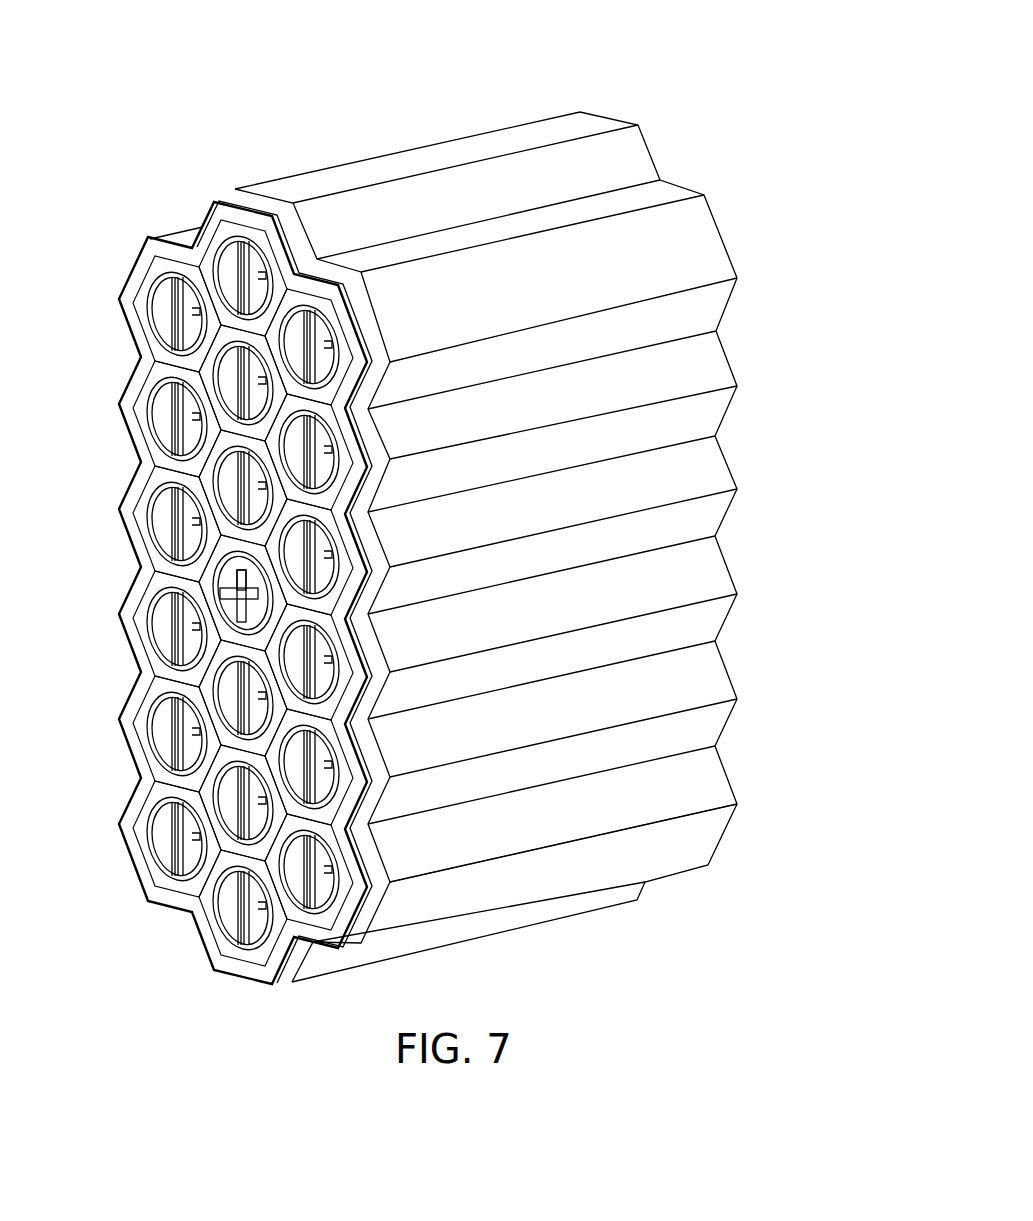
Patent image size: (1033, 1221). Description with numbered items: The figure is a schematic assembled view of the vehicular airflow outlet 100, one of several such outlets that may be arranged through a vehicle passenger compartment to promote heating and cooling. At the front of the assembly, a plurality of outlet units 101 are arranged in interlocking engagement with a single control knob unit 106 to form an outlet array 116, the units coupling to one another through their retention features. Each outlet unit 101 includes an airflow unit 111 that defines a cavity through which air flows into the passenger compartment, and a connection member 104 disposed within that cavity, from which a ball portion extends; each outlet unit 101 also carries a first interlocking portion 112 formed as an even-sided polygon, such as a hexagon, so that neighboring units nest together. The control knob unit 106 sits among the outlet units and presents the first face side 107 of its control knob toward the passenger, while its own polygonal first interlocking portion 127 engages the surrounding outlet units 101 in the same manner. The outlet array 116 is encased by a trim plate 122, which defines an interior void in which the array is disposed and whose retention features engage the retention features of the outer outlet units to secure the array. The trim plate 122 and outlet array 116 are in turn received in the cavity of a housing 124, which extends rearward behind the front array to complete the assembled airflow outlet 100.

The vehicular airflow outlet 100 is at (576, 80).
The outlet unit 101 is at (133, 414).
The connection member 104 is at (245, 260).
The control knob unit 106 is at (225, 607).
The first face side 107 is at (226, 586).
The airflow unit 111 is at (250, 262).
The first interlocking portion 112 is at (232, 258).
The outlet array 116 is at (120, 262).
The trim plate 122 is at (243, 228).
The housing 124 is at (562, 406).
The first interlocking portion 127 is at (257, 640).